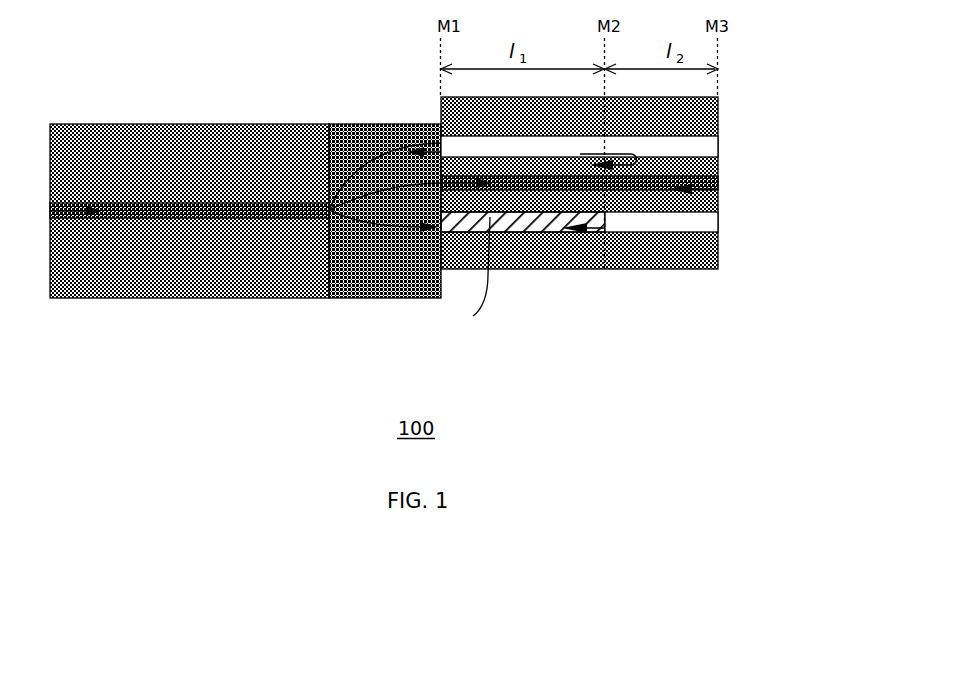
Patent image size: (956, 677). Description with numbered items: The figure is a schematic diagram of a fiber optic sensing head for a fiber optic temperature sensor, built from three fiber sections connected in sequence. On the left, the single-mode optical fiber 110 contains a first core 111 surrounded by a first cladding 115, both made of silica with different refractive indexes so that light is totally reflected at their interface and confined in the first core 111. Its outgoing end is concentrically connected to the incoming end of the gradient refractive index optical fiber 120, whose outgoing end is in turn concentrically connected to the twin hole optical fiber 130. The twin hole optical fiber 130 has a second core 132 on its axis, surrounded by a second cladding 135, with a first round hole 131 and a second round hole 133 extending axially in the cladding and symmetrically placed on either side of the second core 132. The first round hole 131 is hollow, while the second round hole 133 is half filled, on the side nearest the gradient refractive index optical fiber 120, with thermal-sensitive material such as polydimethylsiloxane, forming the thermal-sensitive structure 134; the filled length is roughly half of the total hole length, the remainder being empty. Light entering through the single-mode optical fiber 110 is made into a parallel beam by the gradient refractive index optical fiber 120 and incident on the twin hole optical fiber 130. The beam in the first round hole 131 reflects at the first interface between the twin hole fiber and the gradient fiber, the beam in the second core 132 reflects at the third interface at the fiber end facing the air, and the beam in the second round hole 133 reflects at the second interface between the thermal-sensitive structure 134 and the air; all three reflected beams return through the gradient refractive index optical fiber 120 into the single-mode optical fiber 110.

The single-mode optical fiber 110 is at (190, 299).
The first core 111 is at (175, 203).
The first cladding 115 is at (90, 167).
The gradient refractive index optical fiber 120 is at (391, 299).
The twin hole optical fiber 130 is at (695, 269).
The first round hole 131 is at (718, 147).
The second core 132 is at (718, 183).
The second round hole 133 is at (680, 221).
The thermal-sensitive structure 134 is at (531, 222).
The second cladding 135 is at (619, 252).